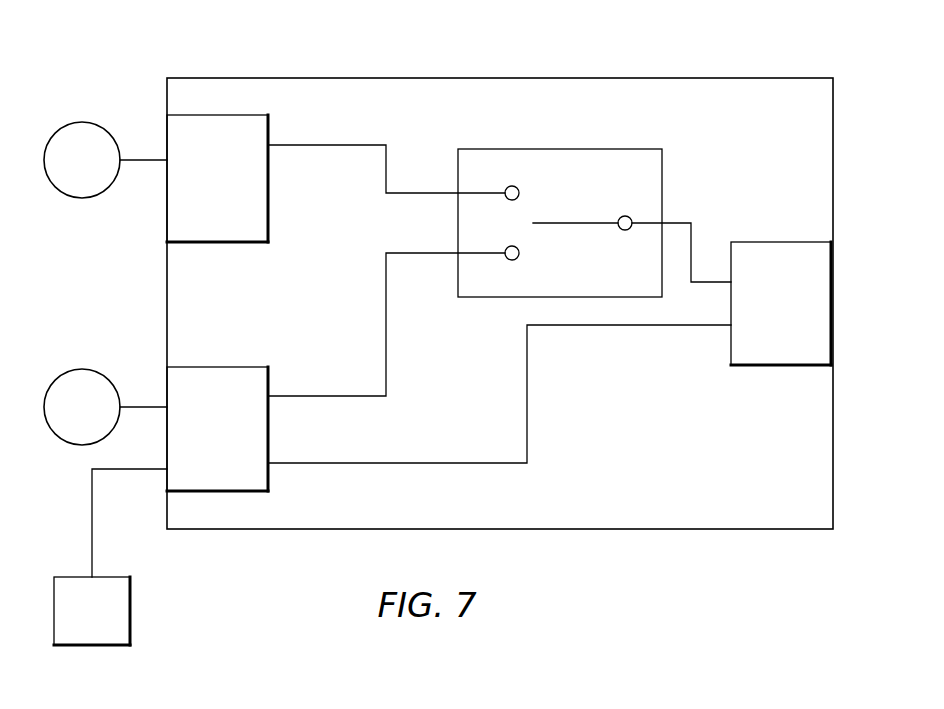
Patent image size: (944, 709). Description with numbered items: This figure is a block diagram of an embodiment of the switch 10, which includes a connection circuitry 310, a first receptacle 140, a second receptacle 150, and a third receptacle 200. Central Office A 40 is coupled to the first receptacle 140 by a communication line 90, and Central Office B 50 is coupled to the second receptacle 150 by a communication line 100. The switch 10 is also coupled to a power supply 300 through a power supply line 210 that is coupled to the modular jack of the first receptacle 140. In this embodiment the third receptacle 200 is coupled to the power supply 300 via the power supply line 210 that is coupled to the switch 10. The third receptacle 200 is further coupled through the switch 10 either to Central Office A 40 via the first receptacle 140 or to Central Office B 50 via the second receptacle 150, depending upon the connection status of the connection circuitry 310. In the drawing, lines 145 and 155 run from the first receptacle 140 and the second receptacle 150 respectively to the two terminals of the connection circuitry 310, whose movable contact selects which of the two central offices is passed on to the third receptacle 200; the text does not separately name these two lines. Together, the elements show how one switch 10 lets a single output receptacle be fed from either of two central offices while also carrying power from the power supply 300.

The switch 10 is at (632, 77).
The Central Office A 40 is at (80, 370).
The Central Office B 50 is at (80, 122).
The communication line 90 is at (148, 407).
The communication line 100 is at (148, 157).
The first receptacle 140 is at (210, 377).
The signal line A 145 is at (360, 398).
The second receptacle 150 is at (210, 232).
The signal line B 155 is at (350, 143).
The third receptacle 200 is at (773, 357).
The power supply line 210 is at (487, 463).
The power supply 300 is at (95, 637).
The connection circuitry 310 is at (663, 177).